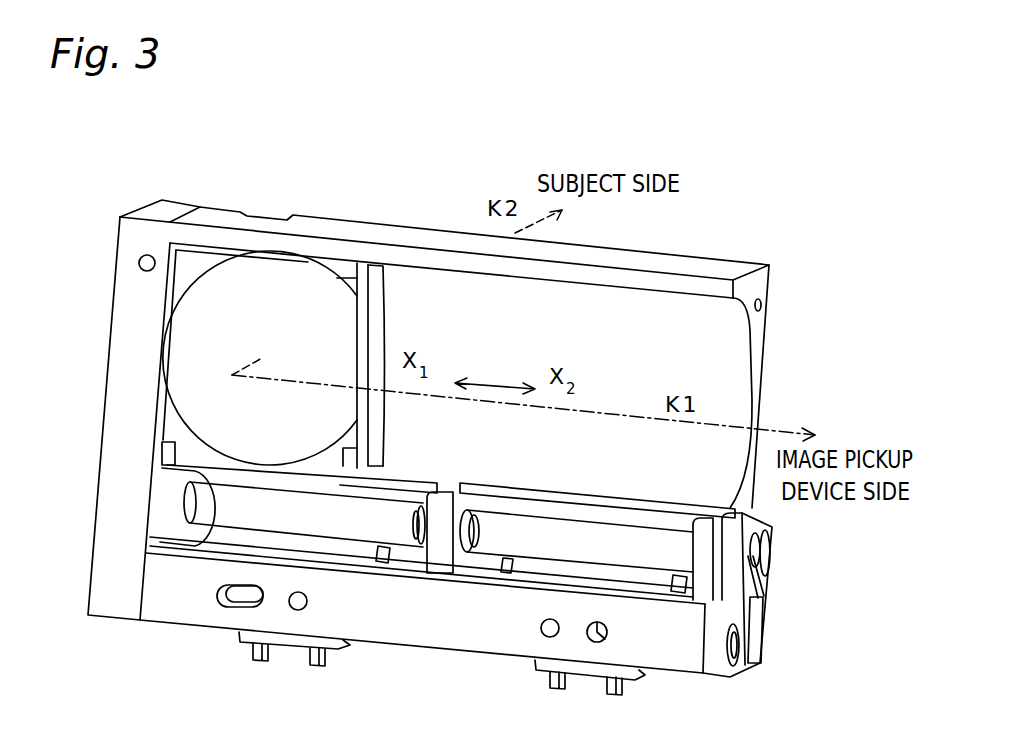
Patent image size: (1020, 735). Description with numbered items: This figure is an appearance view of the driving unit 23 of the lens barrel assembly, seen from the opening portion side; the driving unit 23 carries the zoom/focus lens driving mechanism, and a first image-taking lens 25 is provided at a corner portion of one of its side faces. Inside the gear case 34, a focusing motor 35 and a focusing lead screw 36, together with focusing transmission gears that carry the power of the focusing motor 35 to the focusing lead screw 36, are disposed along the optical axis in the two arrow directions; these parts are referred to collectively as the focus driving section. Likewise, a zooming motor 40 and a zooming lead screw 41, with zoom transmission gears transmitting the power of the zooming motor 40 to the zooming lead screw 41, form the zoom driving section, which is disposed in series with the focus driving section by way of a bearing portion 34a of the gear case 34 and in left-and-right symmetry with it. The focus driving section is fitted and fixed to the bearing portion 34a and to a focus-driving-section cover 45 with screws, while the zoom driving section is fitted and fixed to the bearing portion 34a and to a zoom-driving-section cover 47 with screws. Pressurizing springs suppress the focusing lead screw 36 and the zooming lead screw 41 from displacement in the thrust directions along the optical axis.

The driving unit 23 is at (347, 205).
The first image-taking lens 25 is at (252, 270).
The gear case 34 is at (393, 237).
The bearing portion 34a is at (437, 574).
The focusing motor 35 is at (363, 556).
The focusing lead screw 36 is at (255, 478).
The zooming motor 40 is at (640, 582).
The zooming lead screw 41 is at (578, 507).
The focus-driving-section cover 45 is at (102, 432).
The zoom-driving-section cover 47 is at (768, 590).